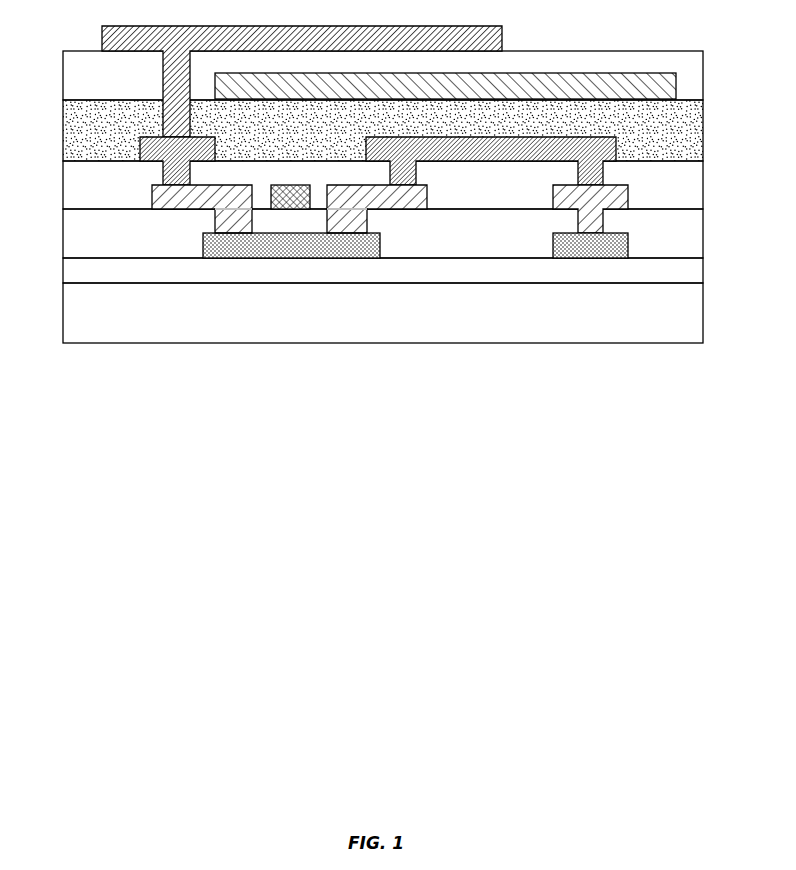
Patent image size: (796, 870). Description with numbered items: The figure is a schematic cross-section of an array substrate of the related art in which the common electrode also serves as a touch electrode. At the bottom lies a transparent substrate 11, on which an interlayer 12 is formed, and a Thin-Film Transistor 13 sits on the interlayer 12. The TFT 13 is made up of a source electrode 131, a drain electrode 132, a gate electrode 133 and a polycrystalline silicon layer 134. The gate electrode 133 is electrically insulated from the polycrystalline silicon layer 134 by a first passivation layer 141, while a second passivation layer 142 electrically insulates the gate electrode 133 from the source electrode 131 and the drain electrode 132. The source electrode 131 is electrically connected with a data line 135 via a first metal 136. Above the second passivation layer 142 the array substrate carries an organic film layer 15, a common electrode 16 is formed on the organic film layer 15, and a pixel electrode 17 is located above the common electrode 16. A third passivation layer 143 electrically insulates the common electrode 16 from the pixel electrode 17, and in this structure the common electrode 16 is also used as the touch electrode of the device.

The transparent substrate 11 is at (670, 309).
The interlayer 12 is at (97, 277).
The Thin-Film Transistor (TFT) 13 is at (291, 300).
The source electrode 131 is at (348, 210).
The drain electrode 132 is at (232, 212).
The gate electrode 133 is at (282, 213).
The polycrystalline silicon layer 134 is at (315, 247).
The data line 135 is at (607, 195).
The first metal 136 is at (587, 148).
The first passivation layer 141 is at (670, 237).
The second passivation layer 142 is at (97, 192).
The third passivation layer 143 is at (97, 79).
The organic film layer 15 is at (97, 139).
The common electrode 16 is at (640, 85).
The pixel electrode 17 is at (113, 39).